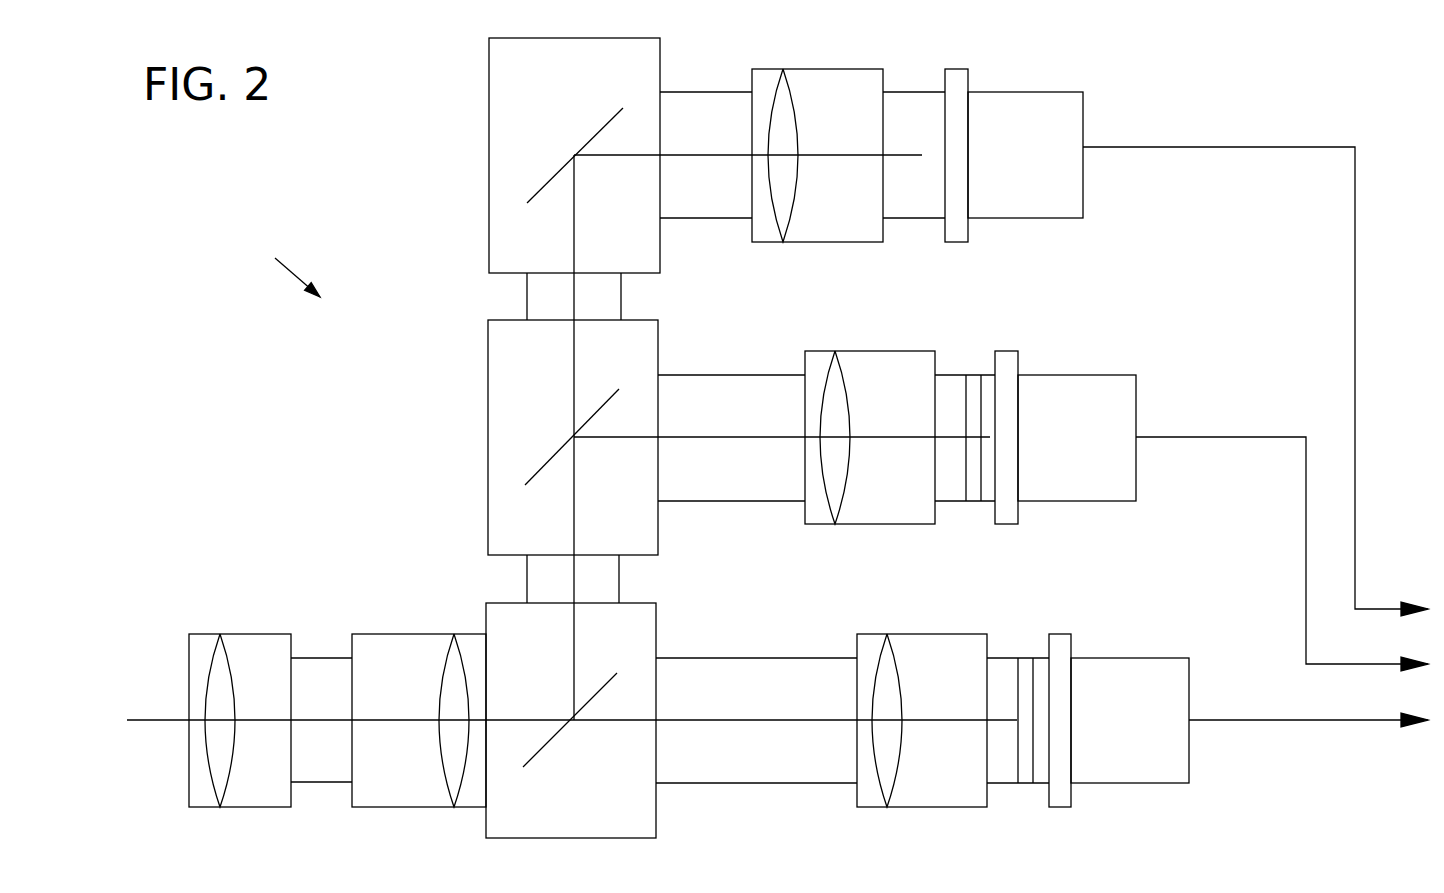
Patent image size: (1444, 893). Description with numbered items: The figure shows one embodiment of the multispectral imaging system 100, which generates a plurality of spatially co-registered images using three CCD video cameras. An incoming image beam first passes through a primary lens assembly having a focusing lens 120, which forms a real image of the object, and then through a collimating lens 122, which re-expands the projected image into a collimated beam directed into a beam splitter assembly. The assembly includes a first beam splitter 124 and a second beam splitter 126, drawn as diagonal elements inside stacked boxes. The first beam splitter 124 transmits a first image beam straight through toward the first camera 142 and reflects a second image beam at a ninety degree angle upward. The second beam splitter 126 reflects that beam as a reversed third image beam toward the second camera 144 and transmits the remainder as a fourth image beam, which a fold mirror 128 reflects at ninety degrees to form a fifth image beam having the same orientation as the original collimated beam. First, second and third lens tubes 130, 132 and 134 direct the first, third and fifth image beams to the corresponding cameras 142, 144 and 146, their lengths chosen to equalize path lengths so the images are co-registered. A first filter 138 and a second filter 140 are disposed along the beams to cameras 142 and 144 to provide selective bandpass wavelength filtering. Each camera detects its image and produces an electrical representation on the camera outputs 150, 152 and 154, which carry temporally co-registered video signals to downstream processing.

The multispectral imaging system 100 is at (281, 262).
The focusing lens 120 is at (253, 634).
The collimating lens 122 is at (393, 634).
The first beam splitter 124 is at (538, 753).
The second beam splitter 126 is at (543, 465).
The fold mirror 128 is at (543, 184).
The first lens tube 130 is at (757, 658).
The second lens tube 132 is at (739, 375).
The third lens tube 134 is at (707, 92).
The first filter 138 is at (1025, 658).
The second filter 140 is at (973, 375).
The first CCD video camera 142 is at (1138, 648).
The second CCD video camera 144 is at (1086, 365).
The third CCD video camera 146 is at (1033, 83).
The camera output 150 is at (1250, 720).
The camera output 152 is at (1306, 530).
The camera output 154 is at (1349, 342).